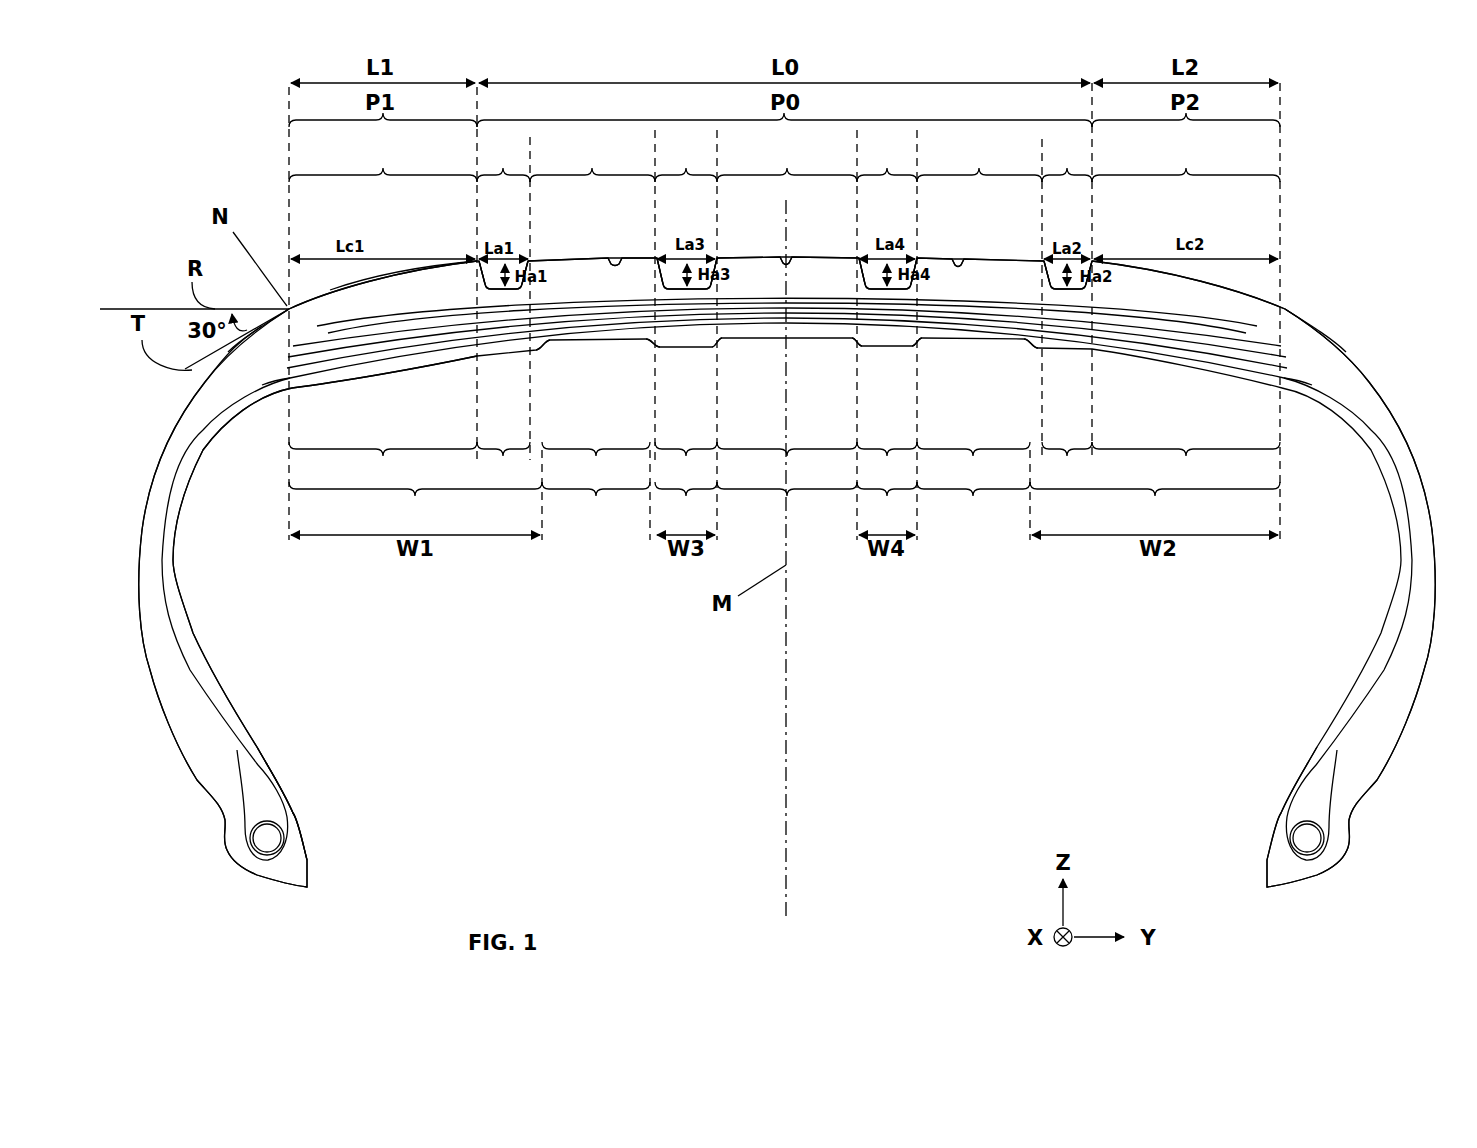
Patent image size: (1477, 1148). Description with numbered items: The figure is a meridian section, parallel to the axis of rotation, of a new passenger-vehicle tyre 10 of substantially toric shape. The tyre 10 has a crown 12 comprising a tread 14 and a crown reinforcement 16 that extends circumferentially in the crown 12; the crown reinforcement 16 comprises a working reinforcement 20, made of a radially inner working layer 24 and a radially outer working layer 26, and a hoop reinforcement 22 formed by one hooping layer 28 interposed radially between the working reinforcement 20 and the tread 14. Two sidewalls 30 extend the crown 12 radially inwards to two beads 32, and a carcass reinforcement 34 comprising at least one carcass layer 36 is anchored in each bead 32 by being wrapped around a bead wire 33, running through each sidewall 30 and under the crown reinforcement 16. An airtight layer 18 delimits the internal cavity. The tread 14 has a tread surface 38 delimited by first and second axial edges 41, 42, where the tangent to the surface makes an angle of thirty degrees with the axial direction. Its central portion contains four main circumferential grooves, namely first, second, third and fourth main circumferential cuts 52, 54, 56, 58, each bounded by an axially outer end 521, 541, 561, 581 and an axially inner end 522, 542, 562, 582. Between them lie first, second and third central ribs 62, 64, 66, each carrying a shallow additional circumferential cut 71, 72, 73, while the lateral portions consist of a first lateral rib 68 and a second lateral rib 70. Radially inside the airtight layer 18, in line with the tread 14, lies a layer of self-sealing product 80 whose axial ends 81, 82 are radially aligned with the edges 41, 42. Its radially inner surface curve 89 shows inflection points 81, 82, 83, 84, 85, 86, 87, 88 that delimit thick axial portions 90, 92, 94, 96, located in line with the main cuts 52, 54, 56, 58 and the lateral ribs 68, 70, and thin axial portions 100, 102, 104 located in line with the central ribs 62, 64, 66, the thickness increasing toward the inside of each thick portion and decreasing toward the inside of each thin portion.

The tyre 10 is at (172, 232).
The crown 12 is at (1383, 262).
The tread 14 is at (335, 272).
The crown reinforcement 16 is at (858, 344).
The airtight layer 18 is at (175, 535).
The working reinforcement 20 is at (1284, 338).
The hoop reinforcement 22 is at (1262, 326).
The radially inner working layer 24 is at (573, 315).
The radially outer working layer 26 is at (617, 312).
The hooping layer 28 is at (497, 312).
The sidewall 30 is at (232, 580).
The bead 32 is at (787, 723).
The bead wire 33 is at (274, 838).
The carcass reinforcement 34 is at (1342, 388).
The carcass layer 36 is at (177, 478).
The tread surface 38 is at (428, 268).
The first axial edge 41 is at (289, 300).
The second axial edge 42 is at (1281, 300).
The first main circumferential cut 52 is at (503, 217).
The second main circumferential cut 54 is at (1067, 217).
The third main circumferential cut 56 is at (686, 217).
The fourth main circumferential cut 58 is at (887, 217).
The first central rib 62 is at (592, 203).
The second central rib 64 is at (788, 202).
The third central rib 66 is at (980, 203).
The first lateral rib 68 is at (383, 164).
The second lateral rib 70 is at (1188, 227).
The additional circumferential cut 71 is at (615, 254).
The additional circumferential cut 72 is at (785, 250).
The additional circumferential cut 73 is at (958, 255).
The layer of self-sealing product 80 is at (280, 388).
The axial end of the self-sealing layer 81 is at (290, 378).
The axial end of the self-sealing layer 82 is at (1283, 378).
The inflection point 83 is at (544, 345).
The inflection point 84 is at (653, 345).
The inflection point 85 is at (718, 343).
The inflection point 86 is at (856, 342).
The inflection point 87 is at (920, 342).
The inflection point 88 is at (1031, 342).
The radially inner surface curve 89 is at (400, 372).
The thick axial portion 90 is at (415, 485).
The thick axial portion 92 is at (1155, 485).
The thick axial portion 94 is at (686, 485).
The thick axial portion 96 is at (887, 485).
The thin axial portion 100 is at (596, 485).
The thin axial portion 102 is at (787, 485).
The thin axial portion 104 is at (973, 485).
The axially outer end of the first main circumferential cut 521 is at (477, 261).
The axially inner end of the first main circumferential cut 522 is at (531, 261).
The axially outer end of the second main circumferential cut 541 is at (1093, 261).
The axially inner end of the second main circumferential cut 542 is at (1043, 261).
The axially outer end of the third main circumferential cut 561 is at (655, 261).
The axially inner end of the third main circumferential cut 562 is at (718, 261).
The axially outer end of the fourth main circumferential cut 581 is at (918, 261).
The axially inner end of the fourth main circumferential cut 582 is at (857, 261).